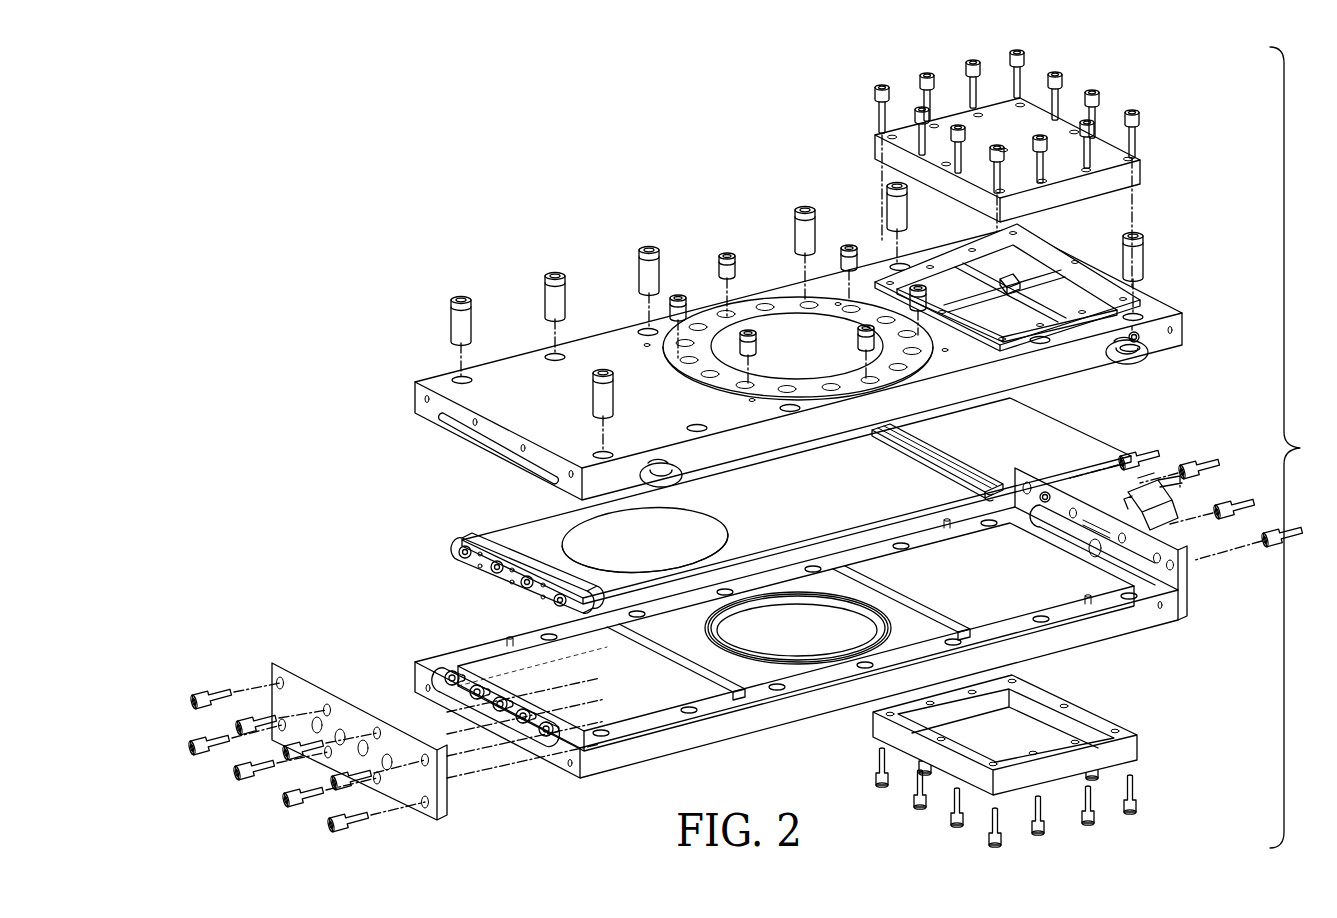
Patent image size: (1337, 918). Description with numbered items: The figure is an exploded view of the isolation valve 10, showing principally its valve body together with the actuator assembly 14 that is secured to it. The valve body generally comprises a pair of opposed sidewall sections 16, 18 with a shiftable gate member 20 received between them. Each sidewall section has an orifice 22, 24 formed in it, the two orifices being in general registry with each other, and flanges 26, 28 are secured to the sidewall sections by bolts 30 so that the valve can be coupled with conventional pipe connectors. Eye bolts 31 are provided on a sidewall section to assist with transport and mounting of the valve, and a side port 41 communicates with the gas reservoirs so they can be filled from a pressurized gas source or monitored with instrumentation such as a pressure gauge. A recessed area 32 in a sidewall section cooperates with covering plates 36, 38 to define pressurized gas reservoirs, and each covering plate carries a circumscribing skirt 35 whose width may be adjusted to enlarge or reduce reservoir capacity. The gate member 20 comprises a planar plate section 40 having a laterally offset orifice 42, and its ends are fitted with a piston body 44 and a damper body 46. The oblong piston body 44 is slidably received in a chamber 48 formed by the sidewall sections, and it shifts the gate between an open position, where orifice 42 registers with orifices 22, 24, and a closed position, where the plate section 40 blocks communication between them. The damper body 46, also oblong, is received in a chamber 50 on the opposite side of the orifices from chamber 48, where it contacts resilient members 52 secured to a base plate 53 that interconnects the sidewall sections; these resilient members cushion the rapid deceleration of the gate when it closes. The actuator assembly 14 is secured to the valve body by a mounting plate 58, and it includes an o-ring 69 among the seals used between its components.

The isolation valve 10 is at (454, 210).
The actuator assembly 14 is at (1206, 490).
The sidewall section 16 is at (527, 375).
The sidewall section 18 is at (796, 651).
The gate member 20 is at (897, 473).
The orifice 22 is at (832, 362).
The orifice 24 is at (835, 640).
The flange 26 is at (785, 305).
The flange 28 is at (865, 615).
The bolts 30 is at (725, 266).
The eye bolts 31 is at (1140, 362).
The recessed area 32 is at (1087, 317).
The skirt 35 is at (886, 155).
The covering plate 36 is at (1117, 155).
The covering plate 38 is at (1032, 727).
The plate section 40 is at (816, 508).
The side port 41 is at (1139, 337).
The orifice 42 is at (583, 545).
The piston body 44 is at (970, 470).
The damper body 46 is at (480, 562).
The chamber 48 is at (1040, 583).
The chamber 50 is at (613, 693).
The resilient members 52 is at (558, 720).
The base plate 53 is at (440, 800).
The mounting plate 58 is at (1185, 580).
The o-ring 69 is at (1043, 493).